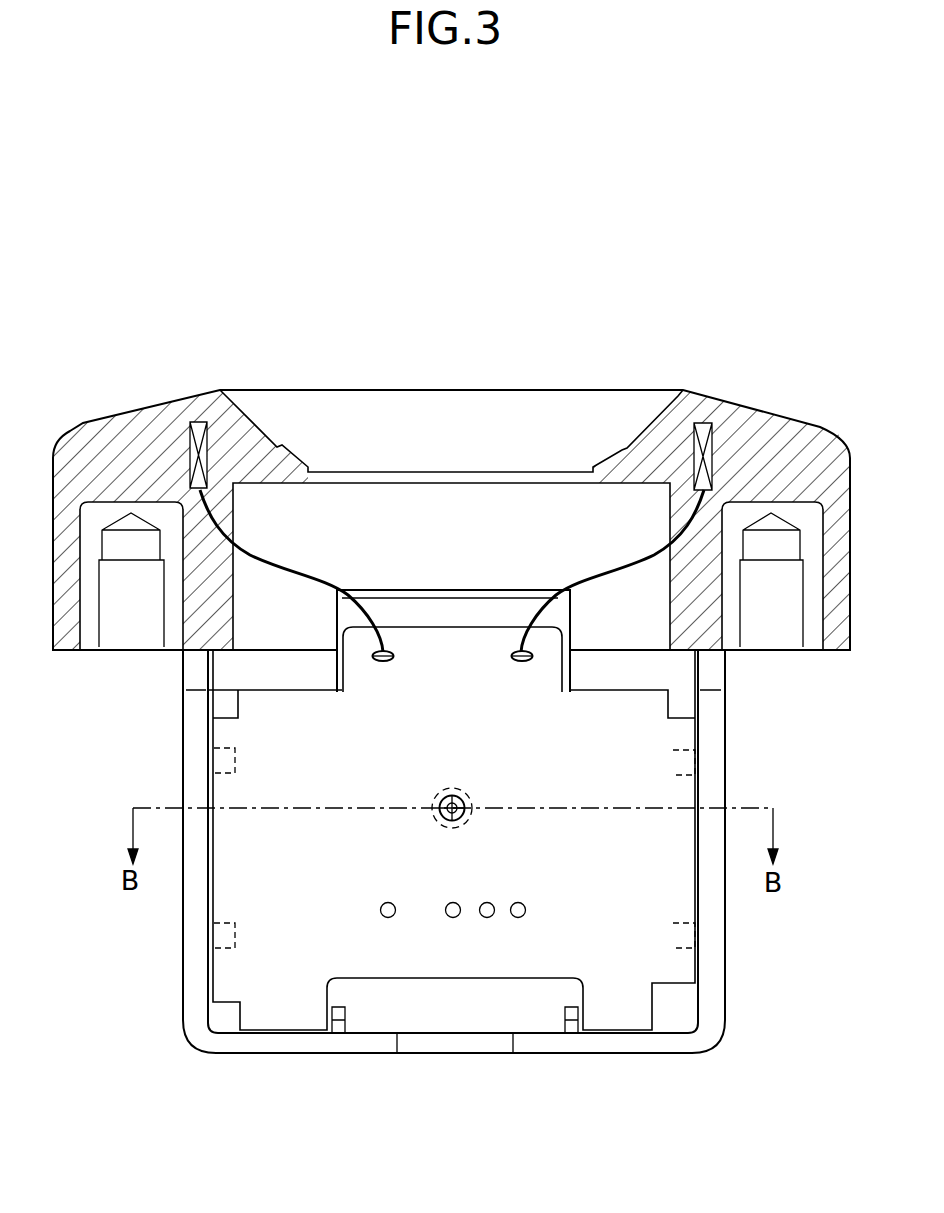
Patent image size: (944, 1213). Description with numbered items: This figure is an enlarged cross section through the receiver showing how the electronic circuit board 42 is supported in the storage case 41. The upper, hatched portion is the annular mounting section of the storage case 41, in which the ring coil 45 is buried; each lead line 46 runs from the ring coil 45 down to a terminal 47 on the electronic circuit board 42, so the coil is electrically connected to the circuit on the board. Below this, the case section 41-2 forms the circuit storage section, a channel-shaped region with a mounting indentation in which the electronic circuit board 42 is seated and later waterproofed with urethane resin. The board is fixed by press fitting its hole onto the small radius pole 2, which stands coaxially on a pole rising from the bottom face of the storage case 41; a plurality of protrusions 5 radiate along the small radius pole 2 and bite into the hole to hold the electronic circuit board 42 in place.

The small radius pole 2 is at (467, 793).
The protrusion 5 is at (467, 820).
The storage case 41 is at (833, 450).
The case section 41-2 is at (717, 1043).
The electronic circuit board 42 is at (657, 897).
The ring coil 45 is at (199, 422).
The lead line 46 is at (333, 586).
The terminal 47 is at (381, 658).